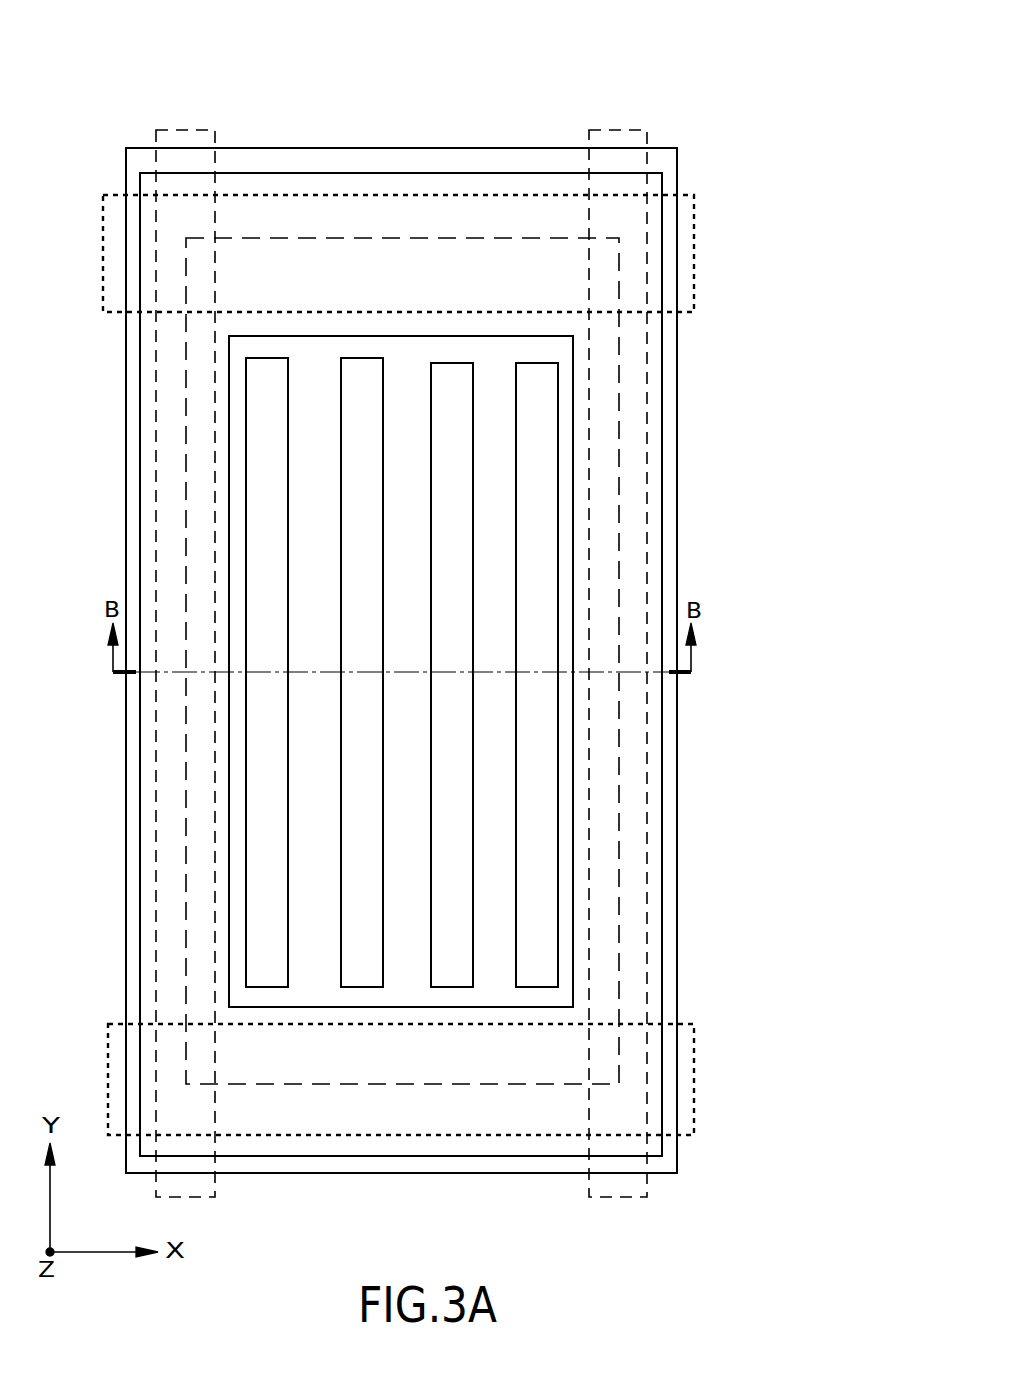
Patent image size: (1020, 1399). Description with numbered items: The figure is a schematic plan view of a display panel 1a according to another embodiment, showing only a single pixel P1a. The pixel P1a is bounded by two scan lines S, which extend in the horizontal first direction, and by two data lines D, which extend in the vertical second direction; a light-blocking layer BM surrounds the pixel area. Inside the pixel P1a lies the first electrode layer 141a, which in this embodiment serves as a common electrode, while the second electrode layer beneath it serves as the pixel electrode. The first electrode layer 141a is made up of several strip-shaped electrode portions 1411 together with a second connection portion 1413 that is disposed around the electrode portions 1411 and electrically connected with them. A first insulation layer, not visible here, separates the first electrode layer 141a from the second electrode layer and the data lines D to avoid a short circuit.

The display panel 1a is at (273, 50).
The light-blocking layer BM is at (387, 148).
The data line D is at (185, 130).
The scan line S is at (694, 253).
The pixel P1a is at (437, 238).
The first electrode layer 141a is at (771, 446).
The electrode portion 1411 is at (493, 465).
The second connection portion 1413 is at (663, 516).